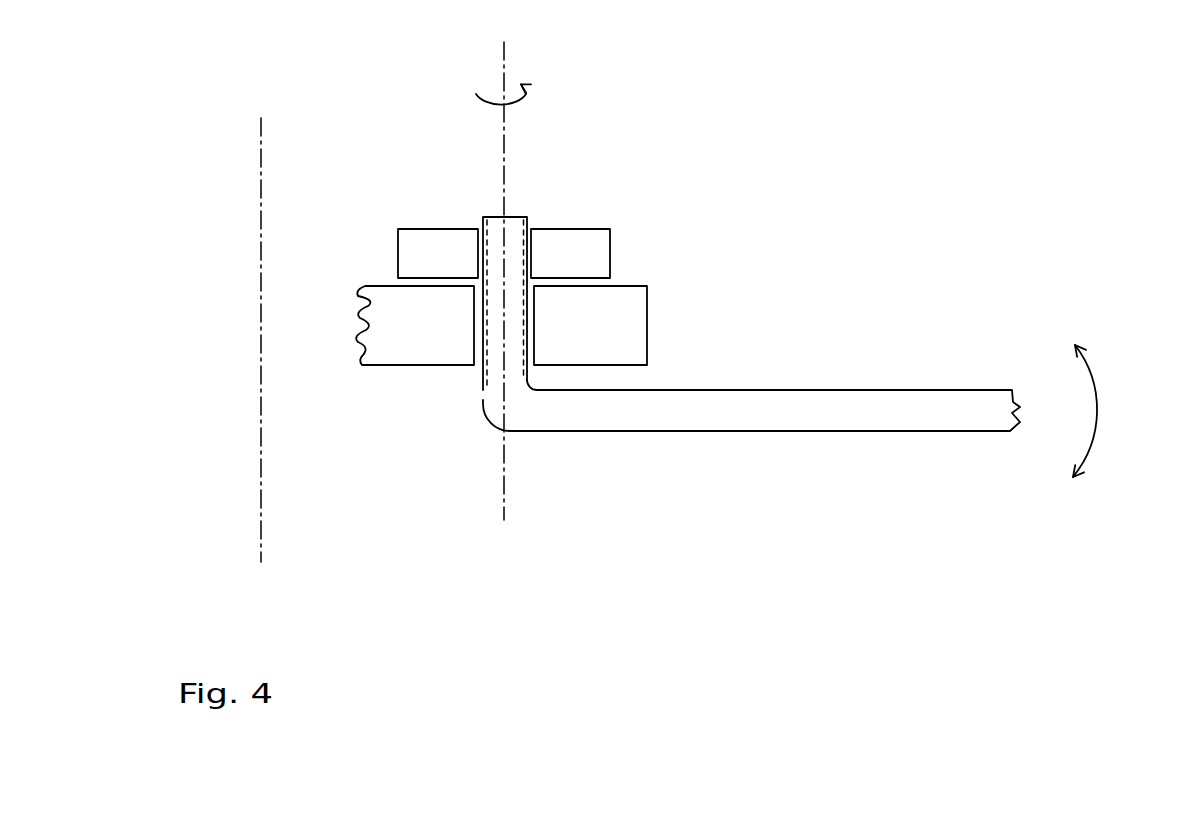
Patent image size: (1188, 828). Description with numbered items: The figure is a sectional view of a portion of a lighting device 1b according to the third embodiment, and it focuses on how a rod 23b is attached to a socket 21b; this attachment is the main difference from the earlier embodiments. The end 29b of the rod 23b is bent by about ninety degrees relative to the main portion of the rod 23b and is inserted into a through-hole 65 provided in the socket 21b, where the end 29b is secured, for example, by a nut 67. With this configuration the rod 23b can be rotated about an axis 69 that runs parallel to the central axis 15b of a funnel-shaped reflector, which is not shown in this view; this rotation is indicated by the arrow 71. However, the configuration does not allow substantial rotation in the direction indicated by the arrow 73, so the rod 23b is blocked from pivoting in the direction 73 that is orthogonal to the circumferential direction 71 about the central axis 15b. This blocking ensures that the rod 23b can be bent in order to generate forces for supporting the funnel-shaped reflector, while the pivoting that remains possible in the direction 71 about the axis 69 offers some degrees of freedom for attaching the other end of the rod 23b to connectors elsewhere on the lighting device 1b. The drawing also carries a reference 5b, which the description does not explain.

The lighting device 1b is at (908, 260).
The valve arrangement 5b is at (806, 238).
The central axis 15b is at (260, 165).
The socket 21b is at (383, 363).
The rod 23b is at (733, 433).
The end of the rod 29b is at (492, 420).
The through-hole 65 is at (478, 368).
The nut 67 is at (612, 247).
The axis 69 is at (505, 53).
The arrow 71 is at (531, 100).
The arrow 73 is at (1098, 407).